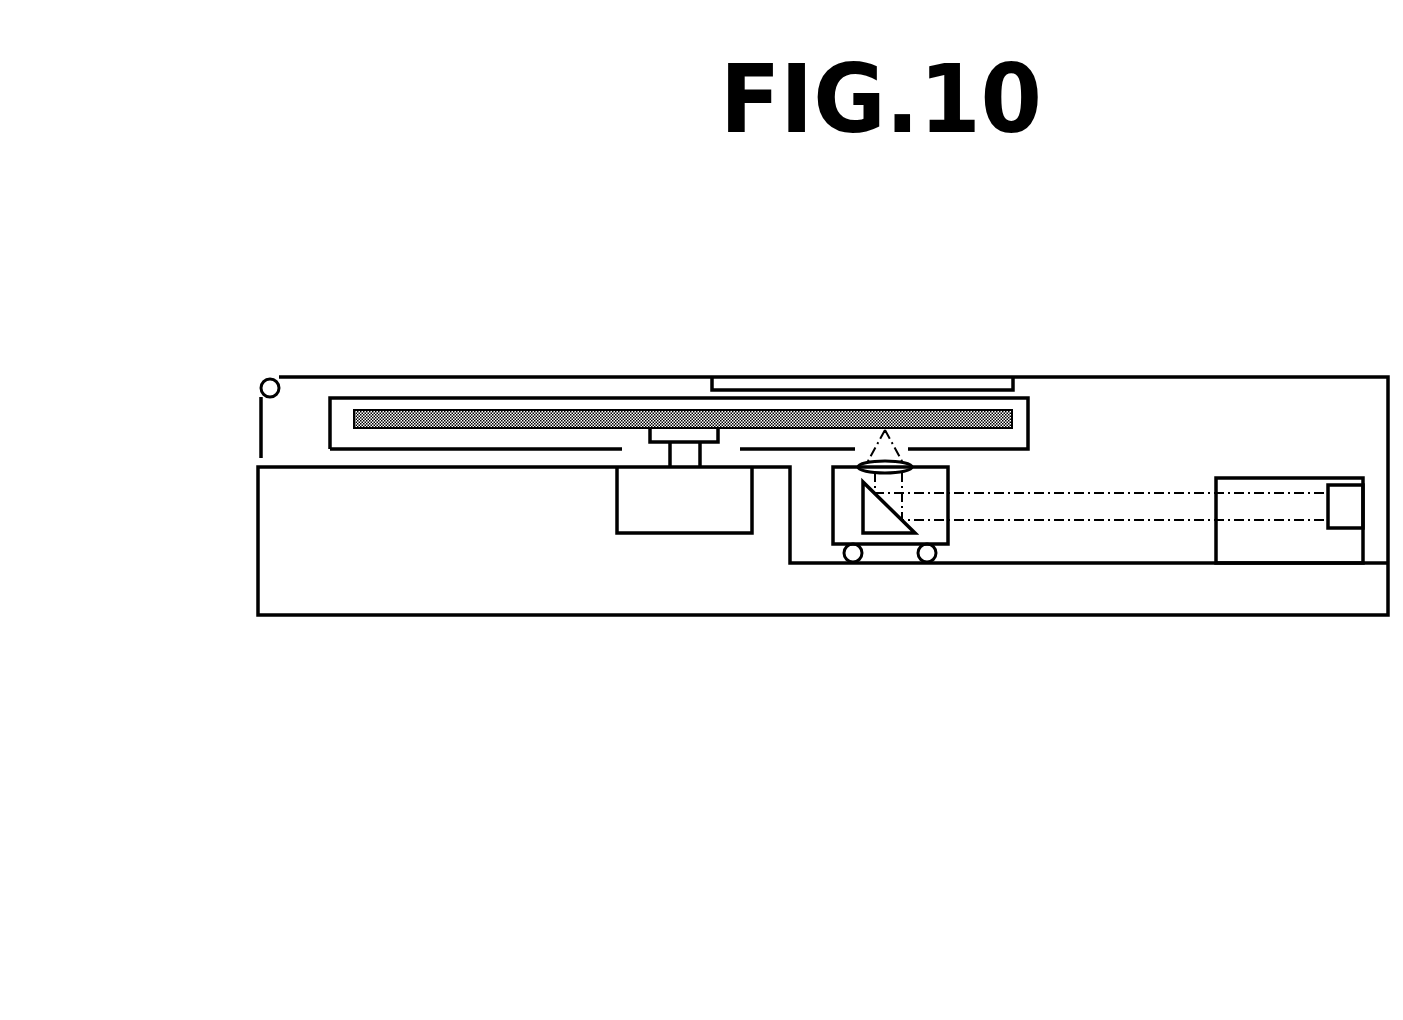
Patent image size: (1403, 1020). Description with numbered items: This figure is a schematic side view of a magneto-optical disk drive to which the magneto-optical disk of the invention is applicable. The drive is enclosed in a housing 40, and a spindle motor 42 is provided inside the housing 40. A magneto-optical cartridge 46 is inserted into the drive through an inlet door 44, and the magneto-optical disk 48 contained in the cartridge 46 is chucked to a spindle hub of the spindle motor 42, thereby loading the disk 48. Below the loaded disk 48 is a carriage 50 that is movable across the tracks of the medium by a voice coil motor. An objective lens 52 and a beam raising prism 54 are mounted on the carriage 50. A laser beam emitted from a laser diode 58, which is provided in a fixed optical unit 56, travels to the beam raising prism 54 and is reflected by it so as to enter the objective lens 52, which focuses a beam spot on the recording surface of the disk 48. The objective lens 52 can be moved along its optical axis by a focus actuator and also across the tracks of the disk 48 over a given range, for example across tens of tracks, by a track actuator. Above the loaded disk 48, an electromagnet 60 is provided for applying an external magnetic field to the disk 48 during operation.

The housing 40 is at (1150, 377).
The spindle motor 42 is at (685, 521).
The inlet door 44 is at (261, 425).
The magneto-optical cartridge 46 is at (463, 398).
The magneto-optical disk 48 is at (565, 410).
The carriage 50 is at (953, 535).
The objective lens 52 is at (905, 467).
The beam raising prism 54 is at (883, 526).
The fixed optical unit 56 is at (1227, 478).
The laser diode 58 is at (1347, 493).
The electromagnet 60 is at (786, 383).